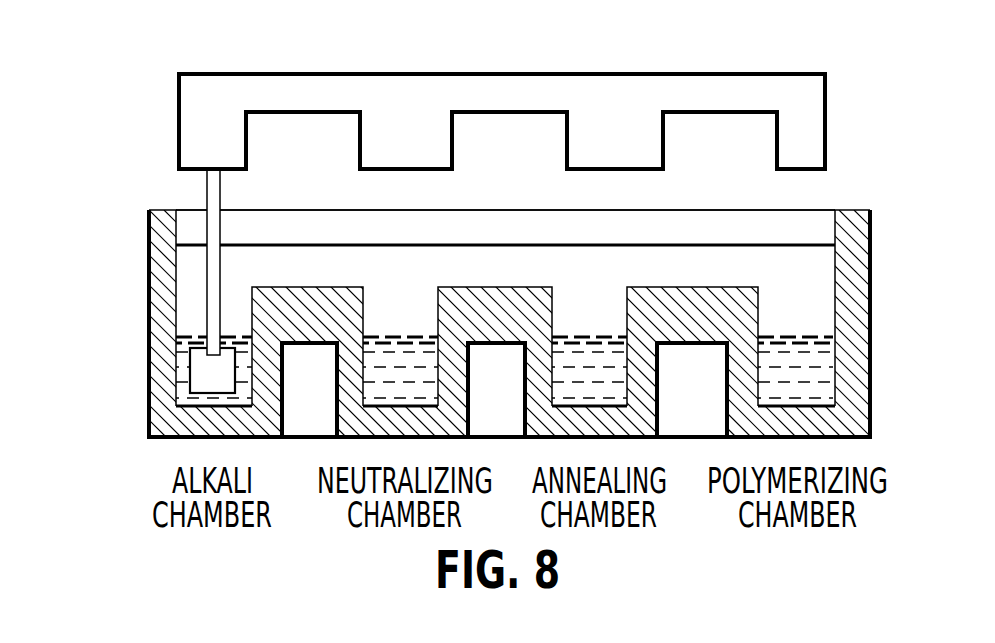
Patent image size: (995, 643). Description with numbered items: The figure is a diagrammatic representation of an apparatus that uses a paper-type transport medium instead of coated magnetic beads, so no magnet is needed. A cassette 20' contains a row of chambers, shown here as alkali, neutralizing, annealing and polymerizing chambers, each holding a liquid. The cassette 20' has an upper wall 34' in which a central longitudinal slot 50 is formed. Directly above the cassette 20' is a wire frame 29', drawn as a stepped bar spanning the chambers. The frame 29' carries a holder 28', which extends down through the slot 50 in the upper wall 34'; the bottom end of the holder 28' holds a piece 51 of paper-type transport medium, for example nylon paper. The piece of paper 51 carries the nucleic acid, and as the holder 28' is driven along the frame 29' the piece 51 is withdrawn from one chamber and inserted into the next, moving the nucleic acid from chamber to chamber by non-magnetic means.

The cassette 20' is at (497, 323).
The holder 28' is at (151, 260).
The wire frame 29' is at (517, 84).
The upper wall 34' is at (505, 172).
The central longitudinal slot 50 is at (340, 210).
The piece of paper-type transport medium 51 is at (203, 384).